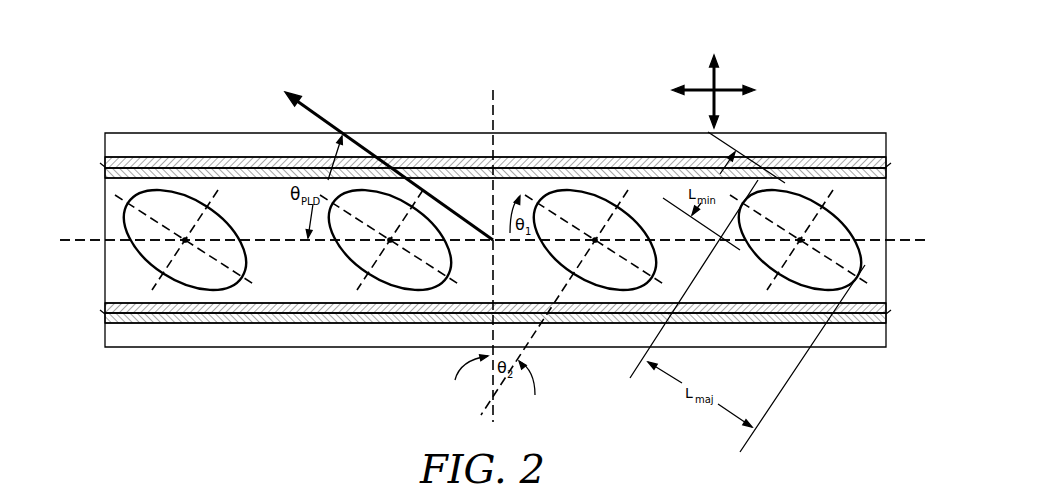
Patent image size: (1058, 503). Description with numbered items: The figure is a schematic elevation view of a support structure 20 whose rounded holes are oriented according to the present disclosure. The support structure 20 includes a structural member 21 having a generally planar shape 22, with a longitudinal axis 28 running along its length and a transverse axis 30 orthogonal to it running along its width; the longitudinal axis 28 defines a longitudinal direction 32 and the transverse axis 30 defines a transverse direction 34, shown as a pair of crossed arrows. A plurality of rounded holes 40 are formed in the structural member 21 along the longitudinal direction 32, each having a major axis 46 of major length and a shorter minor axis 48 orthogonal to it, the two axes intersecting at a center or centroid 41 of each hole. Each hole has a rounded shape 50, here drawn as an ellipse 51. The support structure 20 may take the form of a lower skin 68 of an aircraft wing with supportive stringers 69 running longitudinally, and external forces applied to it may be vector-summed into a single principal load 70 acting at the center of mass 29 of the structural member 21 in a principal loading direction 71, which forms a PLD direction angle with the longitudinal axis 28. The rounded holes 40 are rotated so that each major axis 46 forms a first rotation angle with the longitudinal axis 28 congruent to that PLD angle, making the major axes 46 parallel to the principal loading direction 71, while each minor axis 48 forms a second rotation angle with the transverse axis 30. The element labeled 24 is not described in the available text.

The support structure 20 is at (155, 72).
The structural member 21 is at (440, 147).
The generally planar shape 22 is at (812, 77).
The liner 24 is at (812, 77).
The longitudinal axis 28 is at (88, 240).
The center of mass 29 is at (507, 236).
The transverse axis 30 is at (490, 115).
The longitudinal direction 32 is at (740, 82).
The transverse direction 34 is at (703, 77).
The rounded holes 40 is at (165, 205).
The center or centroid 41 is at (800, 240).
The major axis 46 is at (150, 213).
The minor axis 48 is at (195, 205).
The shape 50 is at (300, 393).
The ellipse 51 is at (300, 393).
The lower skin 68 is at (300, 58).
The stringers 69 is at (808, 165).
The principal load 70 is at (322, 114).
The principal loading direction (PLD) 71 is at (322, 114).